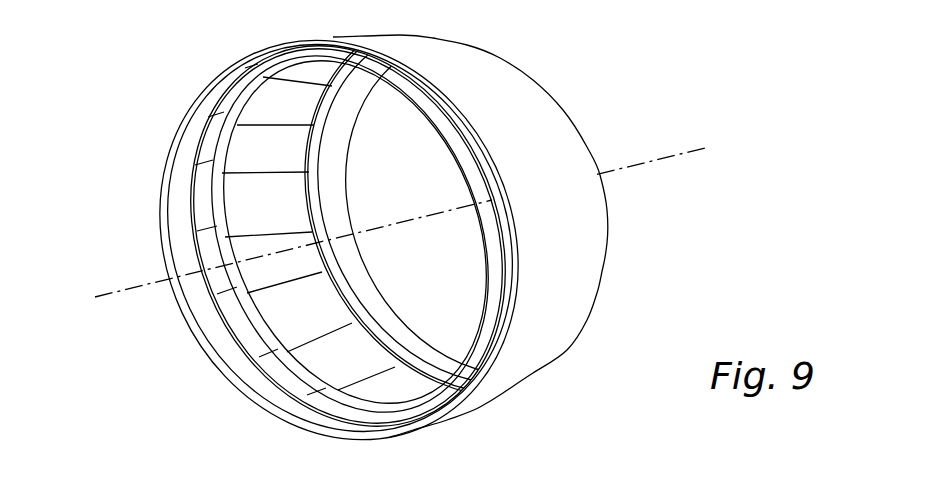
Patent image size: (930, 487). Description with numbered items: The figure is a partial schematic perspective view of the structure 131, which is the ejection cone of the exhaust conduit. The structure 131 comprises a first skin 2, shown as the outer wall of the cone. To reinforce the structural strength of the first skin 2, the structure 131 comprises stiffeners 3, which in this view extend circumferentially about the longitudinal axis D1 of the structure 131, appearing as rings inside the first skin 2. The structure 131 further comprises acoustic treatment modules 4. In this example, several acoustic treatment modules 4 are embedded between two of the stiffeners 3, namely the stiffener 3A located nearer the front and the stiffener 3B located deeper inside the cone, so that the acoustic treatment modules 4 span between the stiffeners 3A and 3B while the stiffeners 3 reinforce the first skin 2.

The first skin 2 is at (424, 57).
The stiffeners 3 is at (427, 243).
The stiffener 3A is at (230, 100).
The stiffener 3B is at (373, 318).
The acoustic treatment modules 4 is at (280, 197).
The structure 131 is at (547, 60).
The longitudinal axis D1 is at (110, 288).